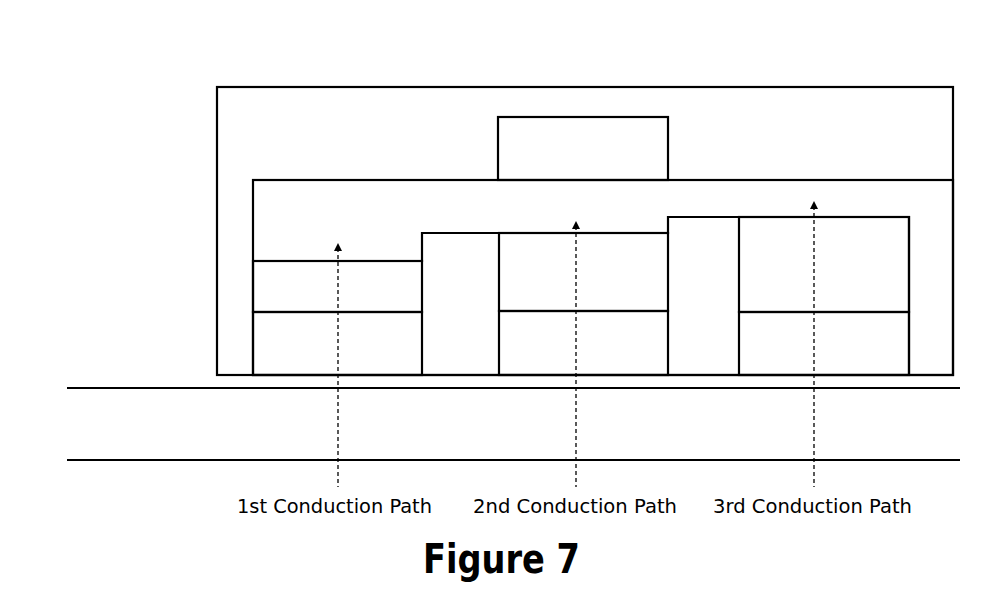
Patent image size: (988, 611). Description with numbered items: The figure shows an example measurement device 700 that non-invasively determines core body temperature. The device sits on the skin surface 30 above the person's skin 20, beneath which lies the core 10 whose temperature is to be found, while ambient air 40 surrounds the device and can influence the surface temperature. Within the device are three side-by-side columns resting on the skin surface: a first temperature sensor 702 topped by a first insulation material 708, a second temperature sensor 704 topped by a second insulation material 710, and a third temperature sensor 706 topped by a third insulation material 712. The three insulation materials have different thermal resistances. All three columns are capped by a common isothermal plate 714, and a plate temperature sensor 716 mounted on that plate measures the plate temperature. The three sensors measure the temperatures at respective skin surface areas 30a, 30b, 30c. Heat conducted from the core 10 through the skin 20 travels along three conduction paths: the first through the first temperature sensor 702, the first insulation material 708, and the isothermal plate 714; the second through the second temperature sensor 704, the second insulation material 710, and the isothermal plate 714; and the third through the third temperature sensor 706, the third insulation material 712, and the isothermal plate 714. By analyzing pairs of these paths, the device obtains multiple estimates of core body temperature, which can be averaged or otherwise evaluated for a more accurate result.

The measurement device 700 is at (248, 63).
The isothermal plate 714 is at (603, 277).
The plate temperature sensor 716 is at (583, 148).
The first insulation material 708 is at (337, 286).
The first temperature sensor 702 is at (337, 343).
The second insulation material 710 is at (583, 272).
The second temperature sensor 704 is at (583, 343).
The third insulation material 712 is at (824, 264).
The third temperature sensor 706 is at (824, 343).
The ambient air 40 is at (99, 253).
The skin surface 30 is at (501, 375).
The skin 20 is at (501, 437).
The core 10 is at (80, 491).
The first skin surface area 30a is at (353, 390).
The second skin surface area 30b is at (596, 390).
The third skin surface area 30c is at (836, 390).